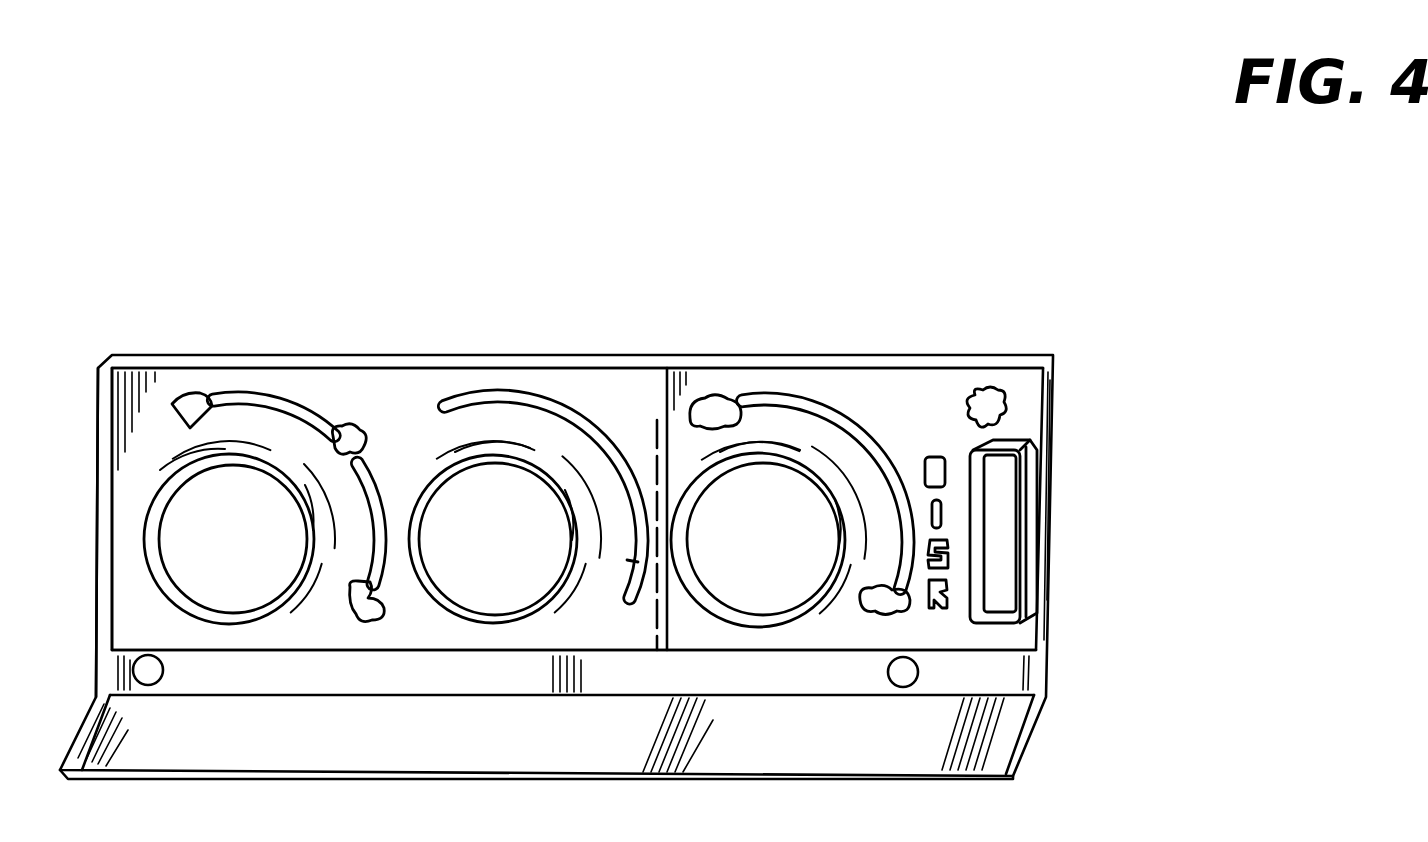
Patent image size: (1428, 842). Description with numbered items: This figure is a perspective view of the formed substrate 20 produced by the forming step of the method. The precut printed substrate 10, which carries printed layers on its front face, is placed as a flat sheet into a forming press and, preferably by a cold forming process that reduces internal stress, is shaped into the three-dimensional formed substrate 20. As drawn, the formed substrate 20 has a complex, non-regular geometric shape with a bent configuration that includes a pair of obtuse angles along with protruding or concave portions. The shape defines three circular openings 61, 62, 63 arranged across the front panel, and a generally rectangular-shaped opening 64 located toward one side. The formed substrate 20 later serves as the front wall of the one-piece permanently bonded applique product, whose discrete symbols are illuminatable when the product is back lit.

The substrate 10 is at (412, 380).
The formed substrate 20 is at (880, 346).
The circular opening 61 is at (685, 562).
The circular opening 62 is at (423, 557).
The circular opening 63 is at (162, 562).
The rectangular-shaped opening 64 is at (997, 507).